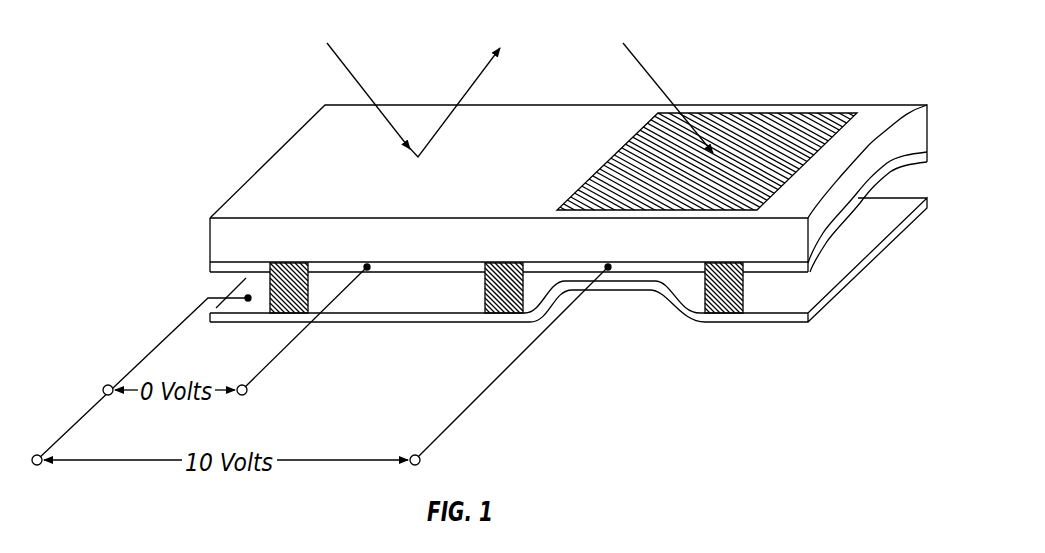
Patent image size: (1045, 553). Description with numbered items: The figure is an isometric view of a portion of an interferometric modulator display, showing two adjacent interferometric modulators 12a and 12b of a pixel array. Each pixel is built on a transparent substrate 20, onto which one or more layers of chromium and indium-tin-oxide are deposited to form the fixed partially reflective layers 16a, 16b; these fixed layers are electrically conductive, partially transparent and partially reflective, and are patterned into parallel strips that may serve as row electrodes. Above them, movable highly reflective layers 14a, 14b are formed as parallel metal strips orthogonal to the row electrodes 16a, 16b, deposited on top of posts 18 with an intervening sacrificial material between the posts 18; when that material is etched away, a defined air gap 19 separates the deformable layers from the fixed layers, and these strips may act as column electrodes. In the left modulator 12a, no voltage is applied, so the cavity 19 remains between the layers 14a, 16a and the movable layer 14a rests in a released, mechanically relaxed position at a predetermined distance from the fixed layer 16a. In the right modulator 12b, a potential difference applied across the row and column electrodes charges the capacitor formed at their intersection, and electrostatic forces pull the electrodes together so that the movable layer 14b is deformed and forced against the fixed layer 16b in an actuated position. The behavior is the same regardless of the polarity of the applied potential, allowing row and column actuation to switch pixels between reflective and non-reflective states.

The interferometric modulator 12a is at (320, 172).
The interferometric modulator 12b is at (772, 136).
The movable highly reflective layer 14a is at (326, 319).
The movable highly reflective layer 14b is at (553, 298).
The fixed partially reflective layer 16a is at (390, 268).
The fixed partially reflective layer 16b is at (584, 268).
The posts 18 is at (289, 314).
The air gap 19 is at (376, 291).
The transparent substrate 20 is at (853, 178).